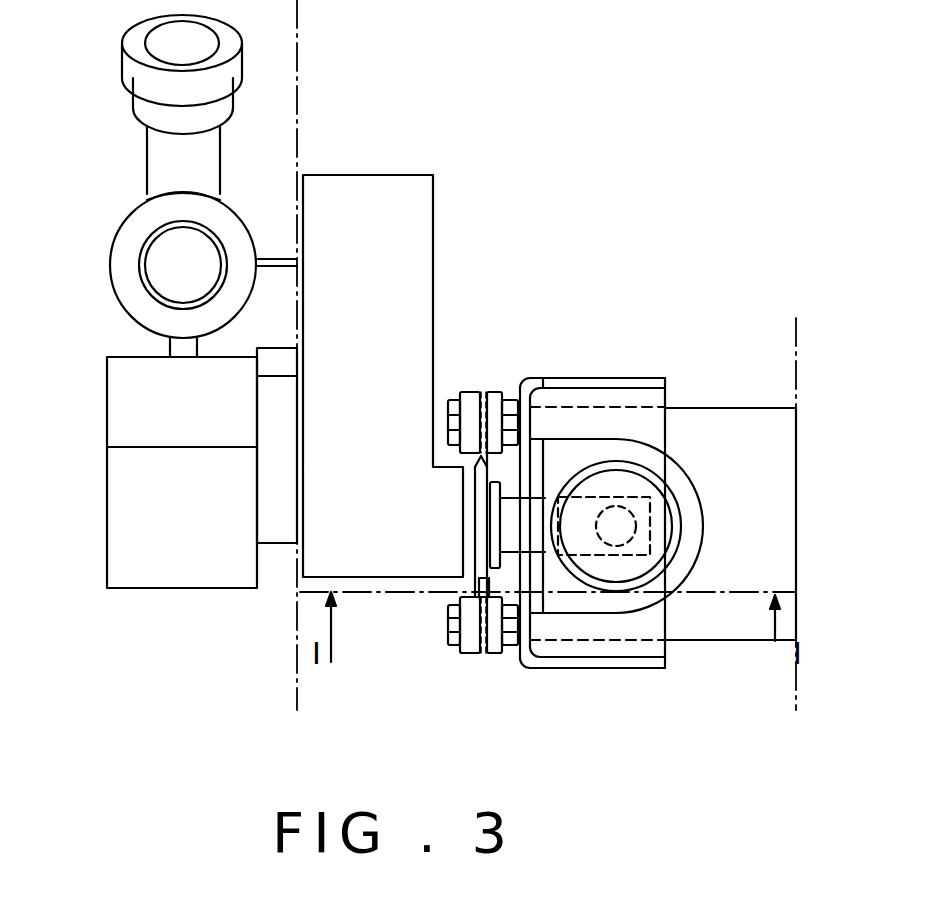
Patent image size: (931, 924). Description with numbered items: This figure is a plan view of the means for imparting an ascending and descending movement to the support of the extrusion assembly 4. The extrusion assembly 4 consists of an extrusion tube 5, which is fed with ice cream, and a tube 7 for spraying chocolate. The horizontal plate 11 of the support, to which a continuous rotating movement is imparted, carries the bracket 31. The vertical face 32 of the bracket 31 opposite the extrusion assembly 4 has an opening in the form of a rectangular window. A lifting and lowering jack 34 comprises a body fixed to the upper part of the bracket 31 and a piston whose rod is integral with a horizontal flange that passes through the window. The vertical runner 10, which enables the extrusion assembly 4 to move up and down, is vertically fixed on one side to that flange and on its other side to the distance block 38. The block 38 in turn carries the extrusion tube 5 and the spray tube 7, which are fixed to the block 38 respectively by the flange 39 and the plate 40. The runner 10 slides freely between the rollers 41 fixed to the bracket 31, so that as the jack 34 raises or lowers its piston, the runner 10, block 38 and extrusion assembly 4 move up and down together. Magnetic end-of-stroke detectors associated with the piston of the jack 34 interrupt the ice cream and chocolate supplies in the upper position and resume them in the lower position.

The extrusion assembly 4 is at (50, 238).
The extrusion tube 5 is at (110, 272).
The tube for spraying chocolate 7 is at (140, 590).
The vertical runner 10 is at (482, 552).
The horizontal plate 11 is at (708, 642).
The bracket 31 is at (600, 670).
The vertical face 32 is at (520, 657).
The lifting and lowering jack 34 is at (645, 492).
The distance block 38 is at (385, 562).
The flange 39 is at (272, 257).
The plate 40 is at (268, 545).
The rollers 41 is at (486, 392).